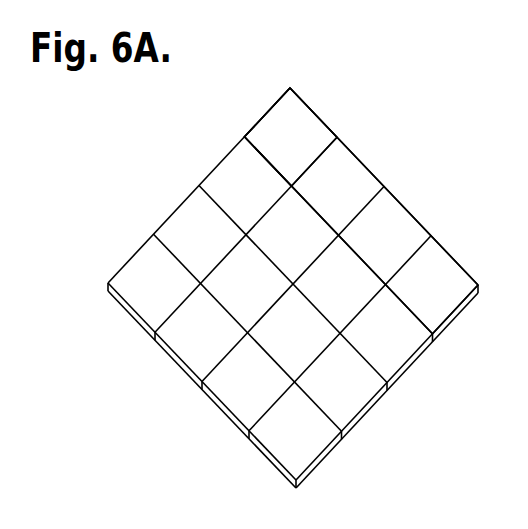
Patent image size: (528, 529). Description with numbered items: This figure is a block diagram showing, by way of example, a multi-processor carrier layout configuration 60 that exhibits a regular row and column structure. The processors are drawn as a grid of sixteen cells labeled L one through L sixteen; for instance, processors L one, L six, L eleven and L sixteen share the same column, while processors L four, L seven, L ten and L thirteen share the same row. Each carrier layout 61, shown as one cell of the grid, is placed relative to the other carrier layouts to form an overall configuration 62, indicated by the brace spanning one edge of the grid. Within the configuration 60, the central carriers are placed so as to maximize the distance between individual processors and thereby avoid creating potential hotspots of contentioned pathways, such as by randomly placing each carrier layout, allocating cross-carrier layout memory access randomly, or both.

The multi-processor carrier layout configuration 60 is at (87, 116).
The carrier layout 61 is at (270, 113).
The overall configuration 62 is at (493, 270).